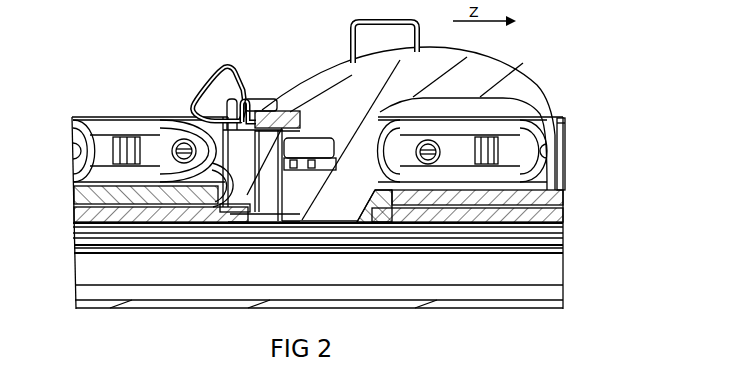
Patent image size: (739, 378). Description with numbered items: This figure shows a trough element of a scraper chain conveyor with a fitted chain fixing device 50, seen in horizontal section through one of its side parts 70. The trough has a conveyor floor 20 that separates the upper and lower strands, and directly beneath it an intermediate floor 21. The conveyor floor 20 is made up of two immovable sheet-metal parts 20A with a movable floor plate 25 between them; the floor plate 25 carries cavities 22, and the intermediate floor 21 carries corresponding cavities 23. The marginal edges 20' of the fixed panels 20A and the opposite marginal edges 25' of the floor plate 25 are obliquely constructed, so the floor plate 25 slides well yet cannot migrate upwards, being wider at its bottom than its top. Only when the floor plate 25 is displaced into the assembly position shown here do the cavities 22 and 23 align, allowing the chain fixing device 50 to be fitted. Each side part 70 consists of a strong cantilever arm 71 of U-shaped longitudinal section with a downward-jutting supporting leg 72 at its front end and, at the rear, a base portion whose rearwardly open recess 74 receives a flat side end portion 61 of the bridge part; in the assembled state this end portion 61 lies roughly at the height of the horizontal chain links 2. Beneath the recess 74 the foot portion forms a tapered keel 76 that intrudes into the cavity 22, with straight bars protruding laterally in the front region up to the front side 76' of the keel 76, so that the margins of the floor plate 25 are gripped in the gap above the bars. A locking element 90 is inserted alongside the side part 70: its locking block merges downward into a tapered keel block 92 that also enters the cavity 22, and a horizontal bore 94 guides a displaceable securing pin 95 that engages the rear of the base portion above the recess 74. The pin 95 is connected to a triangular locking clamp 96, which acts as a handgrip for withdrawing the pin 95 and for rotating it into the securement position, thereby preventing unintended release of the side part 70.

The horizontal chain links 2 is at (152, 143).
The conveyor floor 20 is at (150, 143).
The marginal edges 20' is at (235, 179).
The immovable sheet-metal parts 20A is at (100, 212).
The intermediate floor 21 is at (237, 216).
The cavities 22 is at (230, 210).
The cavities 23 is at (247, 216).
The floor plate 25 is at (392, 235).
The marginal edges 25' is at (219, 242).
The chain fixing device 50 is at (167, 54).
The side end portions 61 is at (312, 148).
The side parts 70 is at (330, 50).
The cantilever arm 71 is at (470, 68).
The supporting leg 72 is at (553, 122).
The recess 74 is at (340, 160).
The keel 76 is at (319, 250).
The front side of the keel 76' is at (362, 235).
The locking element 90 is at (235, 54).
The keel block 92 is at (282, 197).
The horizontal bore 94 is at (249, 98).
The securing pin 95 is at (285, 110).
The locking clamp 96 is at (207, 83).